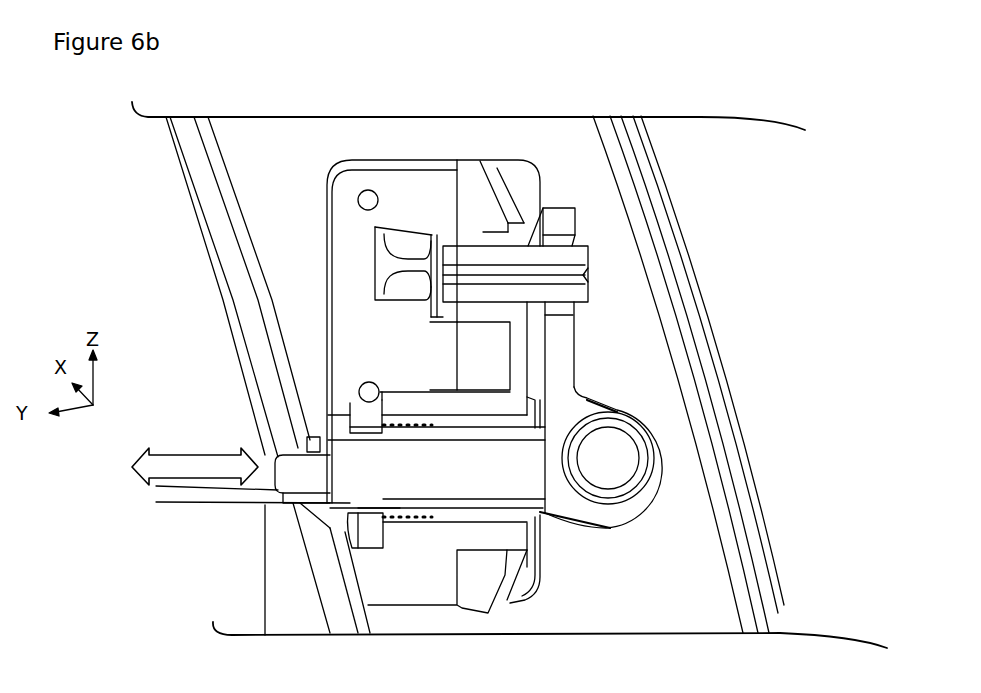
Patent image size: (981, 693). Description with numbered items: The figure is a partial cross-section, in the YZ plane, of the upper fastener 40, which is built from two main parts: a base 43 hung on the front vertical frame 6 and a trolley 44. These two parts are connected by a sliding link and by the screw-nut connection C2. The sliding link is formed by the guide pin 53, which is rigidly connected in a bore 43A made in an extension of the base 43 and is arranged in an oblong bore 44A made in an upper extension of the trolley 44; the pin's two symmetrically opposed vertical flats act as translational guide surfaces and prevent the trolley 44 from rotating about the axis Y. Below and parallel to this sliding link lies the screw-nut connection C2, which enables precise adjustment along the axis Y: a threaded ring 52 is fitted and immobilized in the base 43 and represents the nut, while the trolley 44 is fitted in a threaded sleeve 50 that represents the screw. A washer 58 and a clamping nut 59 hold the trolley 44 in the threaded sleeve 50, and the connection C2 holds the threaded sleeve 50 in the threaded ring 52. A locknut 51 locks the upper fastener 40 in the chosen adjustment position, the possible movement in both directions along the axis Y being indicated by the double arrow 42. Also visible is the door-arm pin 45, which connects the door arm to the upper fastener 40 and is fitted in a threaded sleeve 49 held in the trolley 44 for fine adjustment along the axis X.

The front vertical frame 6 is at (585, 147).
The upper fastener 40 is at (211, 432).
The double arrow 42 is at (205, 475).
The base 43 is at (382, 330).
The bore 43A is at (453, 246).
The trolley 44 is at (562, 375).
The oblong bore 44A is at (573, 317).
The door-arm pin 45 is at (608, 458).
The threaded sleeve 49 is at (640, 498).
The threaded sleeve 50 is at (335, 517).
The locknut 51 is at (370, 532).
The threaded ring 52 is at (670, 565).
The guide pin 53 is at (562, 258).
The washer 58 is at (313, 437).
The clamping nut 59 is at (298, 455).
The screw-nut connection C2 is at (397, 433).